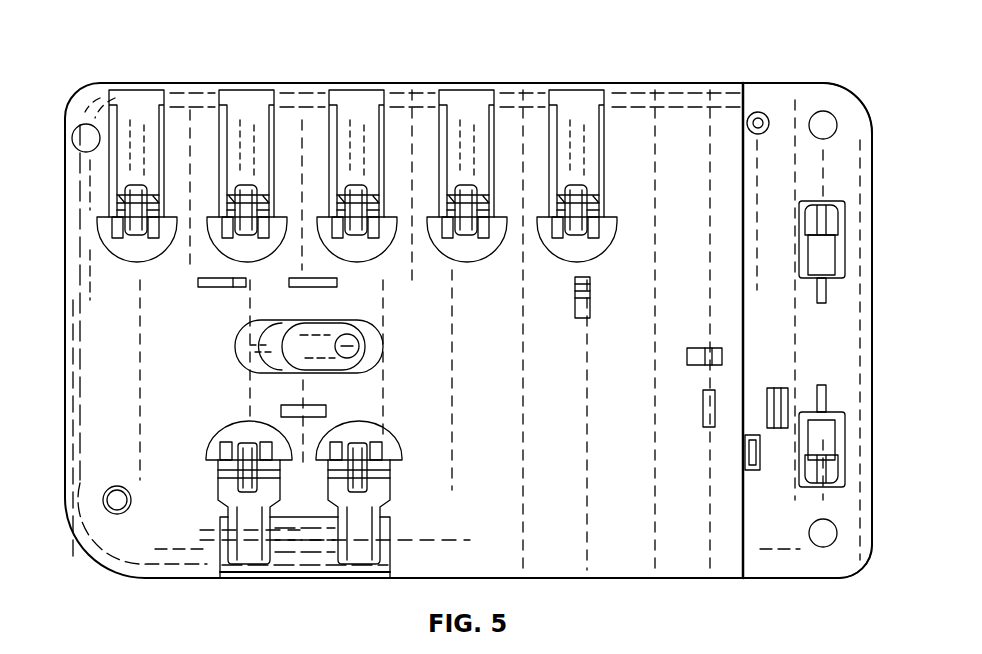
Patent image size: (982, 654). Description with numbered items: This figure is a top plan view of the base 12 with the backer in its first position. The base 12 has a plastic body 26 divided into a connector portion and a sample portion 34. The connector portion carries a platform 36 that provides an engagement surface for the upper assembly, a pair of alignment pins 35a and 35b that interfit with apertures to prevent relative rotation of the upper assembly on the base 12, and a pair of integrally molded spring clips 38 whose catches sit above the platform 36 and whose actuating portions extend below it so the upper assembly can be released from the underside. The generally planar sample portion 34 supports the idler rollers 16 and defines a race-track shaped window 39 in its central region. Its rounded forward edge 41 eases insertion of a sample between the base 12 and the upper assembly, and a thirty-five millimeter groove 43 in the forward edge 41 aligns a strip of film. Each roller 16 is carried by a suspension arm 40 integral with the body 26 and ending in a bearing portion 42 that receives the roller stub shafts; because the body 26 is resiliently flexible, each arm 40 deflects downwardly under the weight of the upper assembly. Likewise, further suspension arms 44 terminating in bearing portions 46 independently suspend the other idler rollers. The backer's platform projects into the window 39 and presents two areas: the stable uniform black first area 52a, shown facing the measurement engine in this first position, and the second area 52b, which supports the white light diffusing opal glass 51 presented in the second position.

The base 12 is at (792, 57).
The idler roller 16 is at (222, 193).
The body 26 is at (685, 80).
The sample portion 34 is at (569, 461).
The alignment pin 35a is at (773, 110).
The alignment pin 35b is at (745, 452).
The platform 36 is at (823, 364).
The spring clip 38 is at (822, 260).
The window 39 is at (245, 355).
The suspension arm 40 is at (143, 105).
The forward edge 41 is at (612, 562).
The bearing portion 42 is at (227, 230).
The groove 43 is at (302, 540).
The suspension arm 44 is at (247, 550).
The bearing portion 46 is at (228, 445).
The white opal glass 51 is at (350, 350).
The first area 52a is at (297, 347).
The second area 52b is at (365, 342).